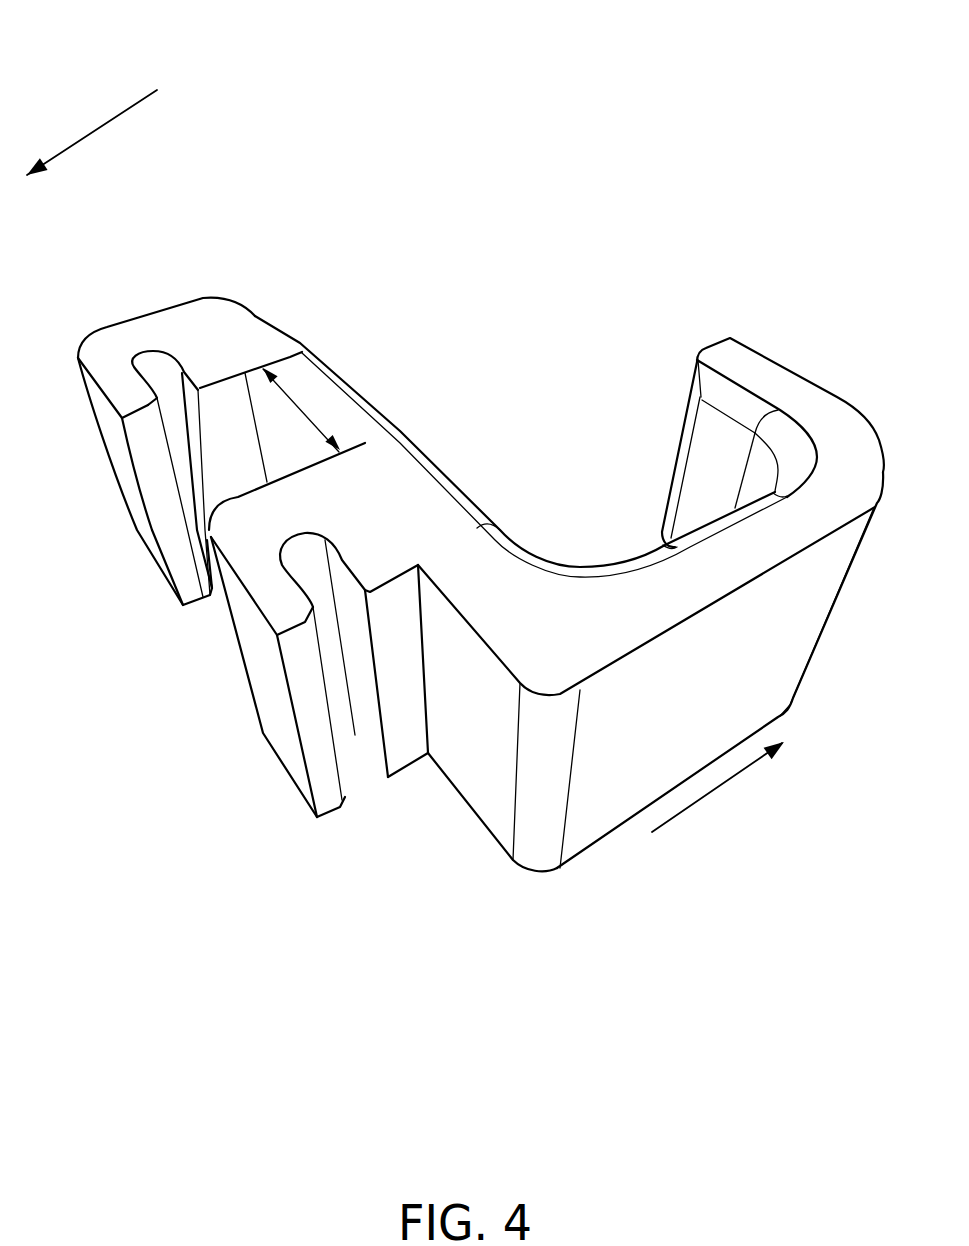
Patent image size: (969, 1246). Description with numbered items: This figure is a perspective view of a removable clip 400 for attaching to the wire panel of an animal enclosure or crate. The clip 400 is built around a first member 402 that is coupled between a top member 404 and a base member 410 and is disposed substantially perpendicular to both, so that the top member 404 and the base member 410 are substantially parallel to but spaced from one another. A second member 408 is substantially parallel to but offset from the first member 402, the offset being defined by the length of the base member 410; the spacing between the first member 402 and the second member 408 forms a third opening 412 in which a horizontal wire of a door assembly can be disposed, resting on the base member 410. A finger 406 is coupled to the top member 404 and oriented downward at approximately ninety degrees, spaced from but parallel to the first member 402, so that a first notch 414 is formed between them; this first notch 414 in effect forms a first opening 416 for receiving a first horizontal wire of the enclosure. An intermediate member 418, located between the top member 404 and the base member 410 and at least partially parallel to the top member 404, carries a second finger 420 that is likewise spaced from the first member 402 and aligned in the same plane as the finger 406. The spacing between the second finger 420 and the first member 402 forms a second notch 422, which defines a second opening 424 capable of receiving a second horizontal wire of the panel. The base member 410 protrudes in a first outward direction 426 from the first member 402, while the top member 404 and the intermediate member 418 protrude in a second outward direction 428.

The removable clip 400 is at (490, 228).
The first member 402 is at (380, 457).
The top member 404 is at (142, 322).
The finger 406 is at (115, 393).
The second member 408 is at (782, 382).
The base member 410 is at (768, 648).
The third opening 412 is at (620, 465).
The first notch 414 is at (170, 360).
The first opening 416 is at (180, 390).
The intermediate member 418 is at (275, 503).
The second finger 420 is at (275, 603).
The second notch 422 is at (344, 570).
The second opening 424 is at (357, 760).
The first outward direction 426 is at (727, 780).
The second outward direction 428 is at (102, 123).